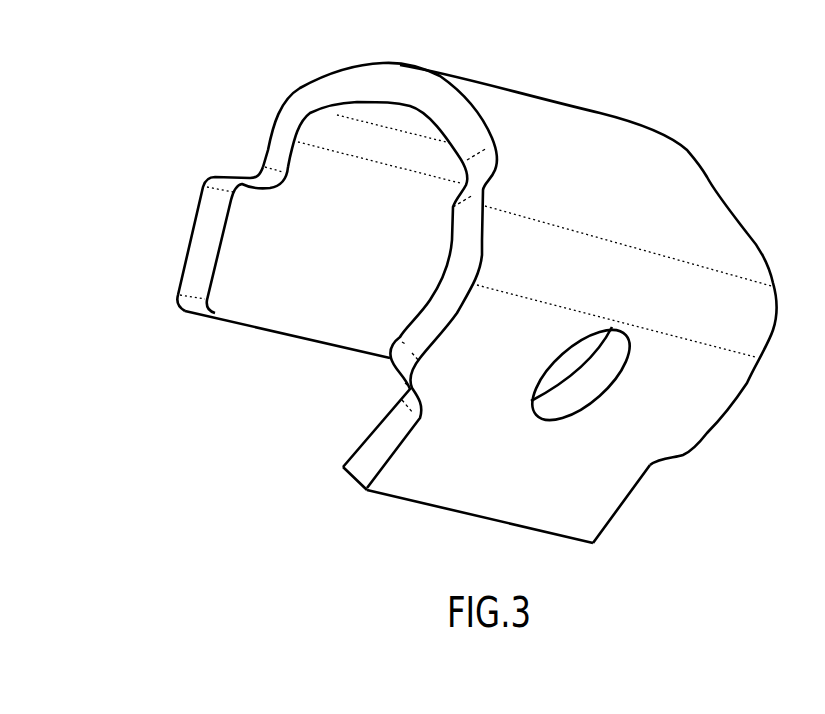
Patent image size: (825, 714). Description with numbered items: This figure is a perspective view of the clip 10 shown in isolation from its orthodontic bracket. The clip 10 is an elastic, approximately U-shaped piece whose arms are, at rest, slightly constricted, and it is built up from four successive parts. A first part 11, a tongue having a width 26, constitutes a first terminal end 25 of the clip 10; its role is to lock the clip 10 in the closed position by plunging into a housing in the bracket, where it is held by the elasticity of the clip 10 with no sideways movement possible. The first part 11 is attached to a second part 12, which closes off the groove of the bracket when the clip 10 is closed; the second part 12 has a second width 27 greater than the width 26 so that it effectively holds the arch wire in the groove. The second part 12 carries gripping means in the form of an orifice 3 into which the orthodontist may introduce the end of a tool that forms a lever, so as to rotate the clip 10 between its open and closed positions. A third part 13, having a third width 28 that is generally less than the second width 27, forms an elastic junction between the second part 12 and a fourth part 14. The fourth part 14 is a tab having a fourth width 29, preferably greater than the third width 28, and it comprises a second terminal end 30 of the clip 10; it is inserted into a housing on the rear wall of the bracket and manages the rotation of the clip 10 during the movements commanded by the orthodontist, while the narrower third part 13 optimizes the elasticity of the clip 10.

The clip 10 is at (682, 118).
The first part 11 is at (590, 487).
The second part 12 is at (703, 407).
The third part 13 is at (283, 142).
The fourth part 14 is at (197, 257).
The hole 3 is at (570, 373).
The first terminal end 25 is at (470, 515).
The width of the first part 26 is at (384, 477).
The second width 27 is at (759, 348).
The third width 28 is at (472, 106).
The fourth width 29 is at (397, 333).
The second terminal end 30 is at (297, 339).